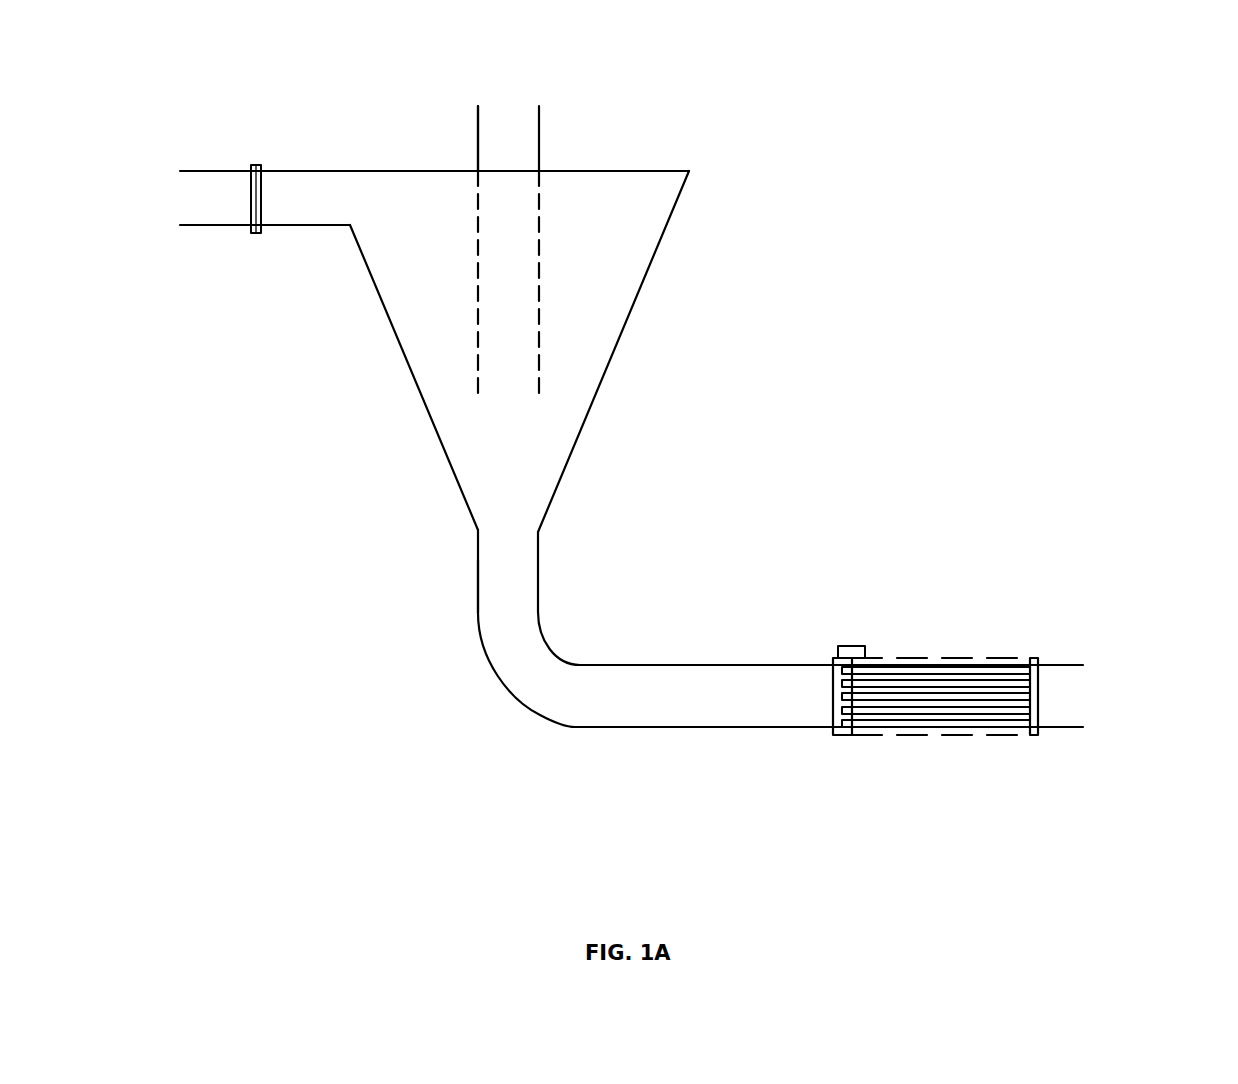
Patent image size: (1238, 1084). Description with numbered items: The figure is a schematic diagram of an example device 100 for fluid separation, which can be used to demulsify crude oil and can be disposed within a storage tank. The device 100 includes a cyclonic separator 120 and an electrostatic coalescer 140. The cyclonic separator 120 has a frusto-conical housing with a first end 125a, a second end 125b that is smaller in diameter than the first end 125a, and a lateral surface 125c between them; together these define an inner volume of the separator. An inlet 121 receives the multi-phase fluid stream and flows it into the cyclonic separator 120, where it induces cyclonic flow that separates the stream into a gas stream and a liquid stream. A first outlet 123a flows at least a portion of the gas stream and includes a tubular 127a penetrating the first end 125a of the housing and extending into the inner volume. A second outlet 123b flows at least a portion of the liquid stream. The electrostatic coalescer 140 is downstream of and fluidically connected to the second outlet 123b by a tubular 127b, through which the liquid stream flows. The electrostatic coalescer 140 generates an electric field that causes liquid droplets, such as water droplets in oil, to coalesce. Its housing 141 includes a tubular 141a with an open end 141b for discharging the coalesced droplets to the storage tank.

The device 100 is at (328, 777).
The cyclonic separator 120 is at (677, 150).
The inlet 121 is at (304, 170).
The first outlet 123a is at (509, 116).
The second outlet 123b is at (524, 535).
The first end 125a is at (563, 170).
The second end 125b is at (476, 533).
The lateral surface 125c is at (614, 350).
The tubular 127a is at (476, 145).
The tubular 127b is at (476, 596).
The electrostatic coalescer 140 is at (1016, 641).
The housing 141 is at (1038, 658).
The tubular 141a is at (1060, 728).
The open end 141b is at (1100, 697).